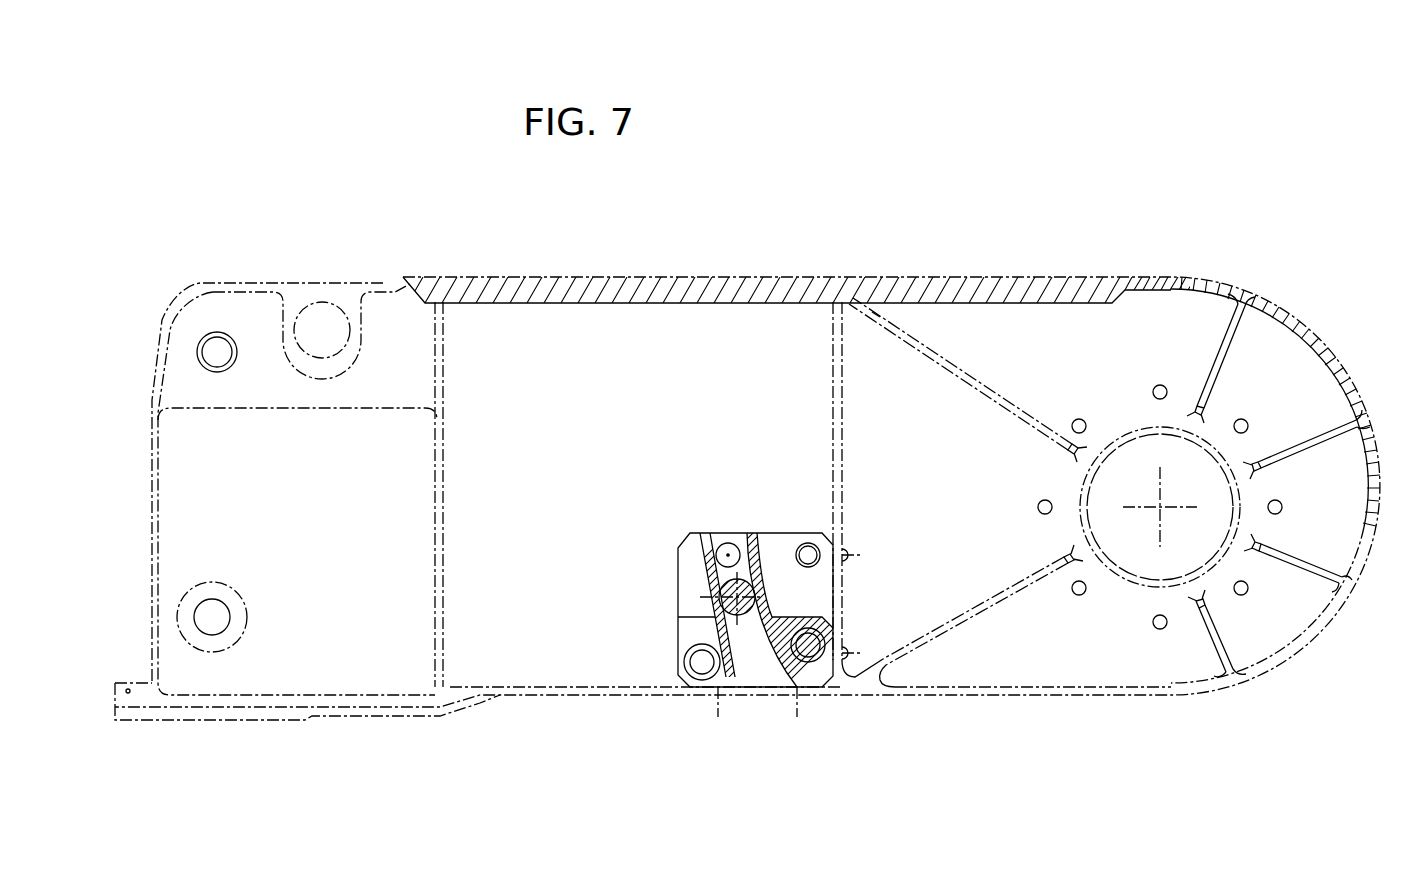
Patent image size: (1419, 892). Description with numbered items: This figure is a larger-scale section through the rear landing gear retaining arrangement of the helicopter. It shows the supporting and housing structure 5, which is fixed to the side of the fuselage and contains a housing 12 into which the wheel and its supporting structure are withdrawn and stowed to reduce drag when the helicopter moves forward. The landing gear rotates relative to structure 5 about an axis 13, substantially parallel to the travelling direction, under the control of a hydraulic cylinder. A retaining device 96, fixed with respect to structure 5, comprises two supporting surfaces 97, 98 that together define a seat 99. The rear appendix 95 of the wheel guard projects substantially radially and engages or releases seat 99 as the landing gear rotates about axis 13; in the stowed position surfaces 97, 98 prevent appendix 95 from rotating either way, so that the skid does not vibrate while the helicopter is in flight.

The supporting and housing structure 5 is at (1013, 284).
The housing 12 is at (1046, 310).
The axis 13 is at (1160, 507).
The rear appendix 95 is at (722, 596).
The retaining device 96 is at (804, 692).
The supporting surface 97 is at (750, 573).
The supporting surface 98 is at (731, 636).
The seat 99 is at (740, 660).